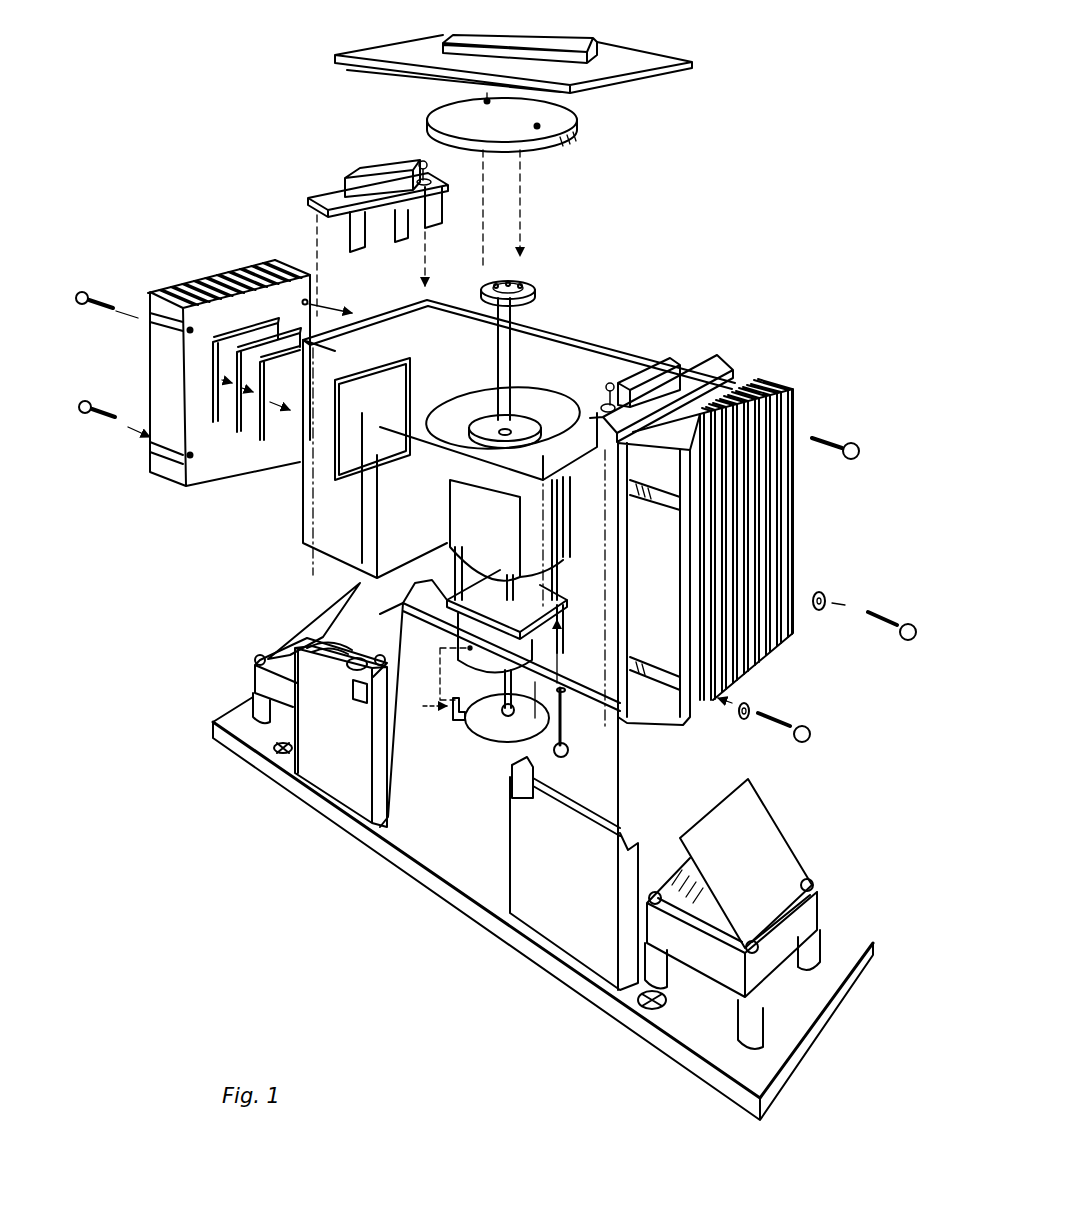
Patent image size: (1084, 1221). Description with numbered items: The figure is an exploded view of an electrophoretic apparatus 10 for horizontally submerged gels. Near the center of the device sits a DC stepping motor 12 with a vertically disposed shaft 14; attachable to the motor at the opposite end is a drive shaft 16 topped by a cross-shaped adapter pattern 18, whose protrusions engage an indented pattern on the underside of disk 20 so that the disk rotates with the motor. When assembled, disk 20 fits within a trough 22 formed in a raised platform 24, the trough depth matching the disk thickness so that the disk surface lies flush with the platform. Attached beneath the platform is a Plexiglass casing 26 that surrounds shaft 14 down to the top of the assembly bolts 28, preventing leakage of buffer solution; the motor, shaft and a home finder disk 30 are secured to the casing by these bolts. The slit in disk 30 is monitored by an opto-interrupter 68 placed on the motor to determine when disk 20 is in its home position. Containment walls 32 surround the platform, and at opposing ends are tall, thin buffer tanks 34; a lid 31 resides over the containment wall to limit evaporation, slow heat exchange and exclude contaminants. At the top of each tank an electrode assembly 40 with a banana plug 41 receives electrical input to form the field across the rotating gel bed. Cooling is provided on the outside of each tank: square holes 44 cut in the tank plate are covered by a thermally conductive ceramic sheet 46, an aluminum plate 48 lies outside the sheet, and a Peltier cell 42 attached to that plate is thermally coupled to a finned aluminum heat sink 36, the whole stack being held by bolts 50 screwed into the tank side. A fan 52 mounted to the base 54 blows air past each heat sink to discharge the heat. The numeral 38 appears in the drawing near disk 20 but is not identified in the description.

The electrophoretic apparatus 10 is at (640, 206).
The DC stepping motor 12 is at (502, 658).
The shaft 14 is at (503, 590).
The drive shaft 16 is at (514, 314).
The cross-shaped adapter pattern 18 is at (525, 282).
The disk 20 is at (580, 138).
The trough 22 is at (548, 410).
The raised platform 24 is at (518, 478).
The casing 26 is at (503, 536).
The assembly bolts 28 is at (460, 613).
The home finder disk 30 is at (512, 732).
The lid 31 is at (645, 60).
The containment walls 32 is at (624, 357).
The buffer tanks 34 is at (305, 533).
The heat sink 36 is at (216, 278).
The aperture in disc 38 is at (445, 116).
The electrodes 40 is at (327, 193).
The banana plug 41 is at (430, 163).
The Peltier cell 42 is at (224, 418).
The square holes 44 is at (350, 467).
The thermally conductive sheet 46 is at (278, 425).
The aluminum plate 48 is at (248, 425).
The bolts 50 is at (92, 408).
The fan 52 is at (255, 663).
The base 54 is at (415, 877).
The opto-interrupter 68 is at (448, 716).